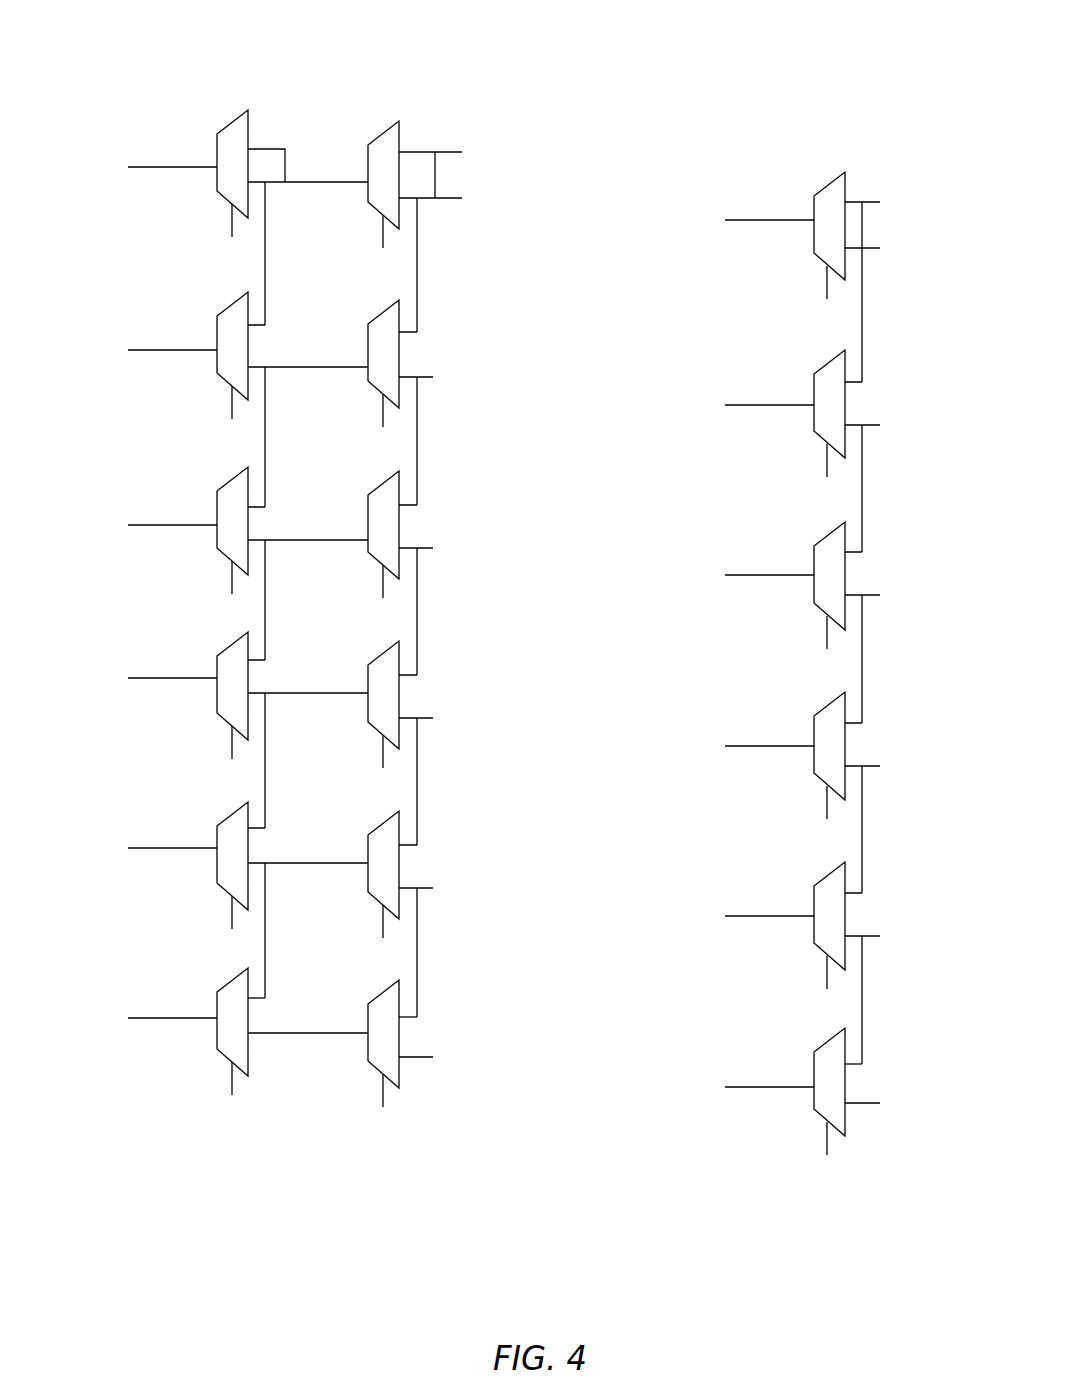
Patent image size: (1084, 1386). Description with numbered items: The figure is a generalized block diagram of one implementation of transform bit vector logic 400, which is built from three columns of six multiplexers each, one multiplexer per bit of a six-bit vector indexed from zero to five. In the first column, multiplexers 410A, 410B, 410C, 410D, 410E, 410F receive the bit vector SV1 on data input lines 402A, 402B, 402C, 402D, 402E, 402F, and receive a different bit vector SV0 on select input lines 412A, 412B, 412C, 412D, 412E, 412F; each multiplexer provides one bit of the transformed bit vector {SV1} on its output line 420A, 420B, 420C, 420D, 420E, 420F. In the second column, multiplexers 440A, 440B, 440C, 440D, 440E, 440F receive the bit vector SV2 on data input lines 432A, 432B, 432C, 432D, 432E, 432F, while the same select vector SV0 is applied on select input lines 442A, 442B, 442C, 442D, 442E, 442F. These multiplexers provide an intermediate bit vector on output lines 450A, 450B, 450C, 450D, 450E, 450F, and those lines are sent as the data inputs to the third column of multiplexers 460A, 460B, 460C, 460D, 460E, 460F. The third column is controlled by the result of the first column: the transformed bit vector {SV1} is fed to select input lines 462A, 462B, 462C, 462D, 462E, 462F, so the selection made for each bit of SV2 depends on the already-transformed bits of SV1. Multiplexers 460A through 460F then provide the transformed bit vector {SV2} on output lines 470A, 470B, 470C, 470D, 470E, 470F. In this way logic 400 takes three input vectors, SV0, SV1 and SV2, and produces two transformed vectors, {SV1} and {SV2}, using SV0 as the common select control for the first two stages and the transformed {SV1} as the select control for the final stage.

The transform bit vector logic 400 is at (749, 98).
The multiplexer 410A is at (838, 1082).
The multiplexer 410B is at (838, 963).
The multiplexer 410C is at (838, 792).
The multiplexer 410D is at (838, 622).
The multiplexer 410E is at (838, 451).
The multiplexer 410F is at (838, 277).
The select input line 412A is at (826, 1146).
The select input line 412B is at (826, 980).
The select input line 412C is at (826, 810).
The select input line 412D is at (826, 640).
The select input line 412E is at (826, 468).
The select input line 412F is at (826, 290).
The output line 420A is at (797, 1090).
The output line 420B is at (797, 919).
The output line 420C is at (797, 749).
The output line 420D is at (797, 578).
The output line 420E is at (797, 408).
The output line 420F is at (797, 223).
The data input line 402A is at (872, 1105).
The data input line 402B is at (872, 938).
The data input line 402C is at (872, 768).
The data input line 402D is at (872, 597).
The data input line 402E is at (872, 427).
The data input line 402F is at (872, 250).
The multiplexer 440A is at (392, 1034).
The multiplexer 440B is at (392, 914).
The multiplexer 440C is at (392, 743).
The multiplexer 440D is at (392, 573).
The multiplexer 440E is at (392, 402).
The multiplexer 440F is at (401, 226).
The select input line 442A is at (382, 1099).
The select input line 442B is at (382, 929).
The select input line 442C is at (382, 759).
The select input line 442D is at (382, 594).
The select input line 442E is at (382, 419).
The select input line 442F is at (382, 236).
The data input line 432A is at (427, 1059).
The data input line 432B is at (427, 890).
The data input line 432C is at (427, 720).
The data input line 432D is at (427, 550).
The data input line 432E is at (427, 379).
The data input line 432F is at (428, 200).
The output line 450A is at (348, 1036).
The output line 450B is at (348, 866).
The output line 450C is at (348, 696).
The output line 450D is at (348, 543).
The output line 450E is at (348, 368).
The output line 450F is at (348, 185).
The multiplexer 460A is at (241, 1022).
The multiplexer 460B is at (241, 900).
The multiplexer 460C is at (241, 730).
The multiplexer 460D is at (241, 563).
The multiplexer 460E is at (241, 399).
The multiplexer 460F is at (251, 217).
The select input line 462A is at (227, 1081).
The select input line 462B is at (227, 915).
The select input line 462C is at (227, 745).
The select input line 462D is at (227, 580).
The select input line 462E is at (227, 405).
The select input line 462F is at (227, 223).
The output line 470A is at (202, 1021).
The output line 470B is at (202, 851).
The output line 470C is at (202, 681).
The output line 470D is at (202, 528).
The output line 470E is at (202, 353).
The output line 470F is at (202, 170).